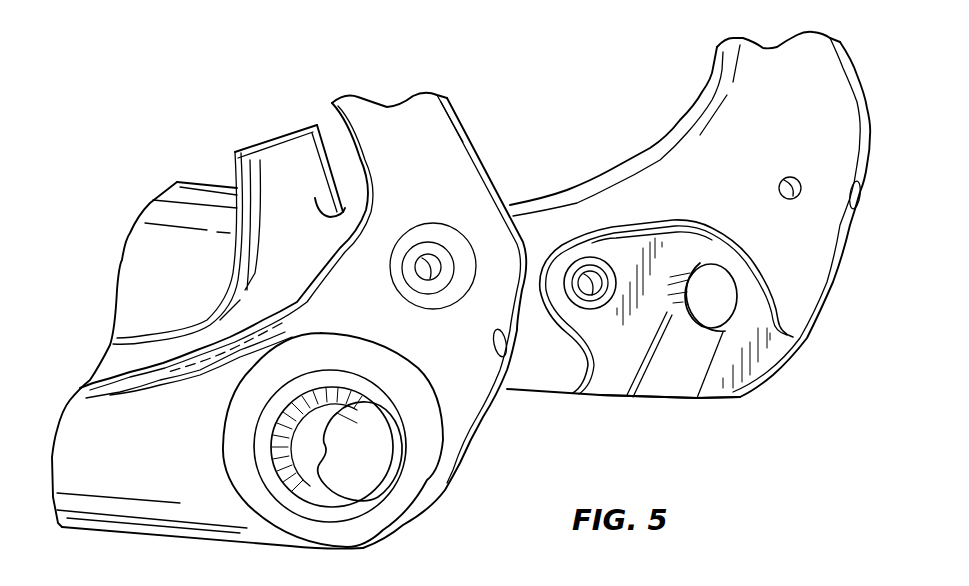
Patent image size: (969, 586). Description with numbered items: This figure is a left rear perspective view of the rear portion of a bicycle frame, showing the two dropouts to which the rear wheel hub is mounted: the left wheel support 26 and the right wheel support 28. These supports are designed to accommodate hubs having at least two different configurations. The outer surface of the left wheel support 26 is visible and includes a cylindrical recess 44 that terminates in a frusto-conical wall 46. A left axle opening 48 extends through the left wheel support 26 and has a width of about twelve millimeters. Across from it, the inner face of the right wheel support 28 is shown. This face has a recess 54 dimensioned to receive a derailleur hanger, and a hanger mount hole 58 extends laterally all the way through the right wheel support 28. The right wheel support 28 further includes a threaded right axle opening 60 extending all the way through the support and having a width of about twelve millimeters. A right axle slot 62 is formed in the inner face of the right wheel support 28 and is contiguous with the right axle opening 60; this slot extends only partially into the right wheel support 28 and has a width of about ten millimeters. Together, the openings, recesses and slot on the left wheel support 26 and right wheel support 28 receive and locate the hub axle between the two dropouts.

The left wheel support 26 is at (453, 160).
The right wheel support 28 is at (850, 143).
The cylindrical recess 44 is at (290, 480).
The frusto-conical wall 46 is at (290, 450).
The left axle opening 48 is at (357, 423).
The recess 54 is at (678, 237).
The hanger mount hole 58 is at (592, 278).
The threaded right axle opening 60 is at (717, 293).
The right axle slot 62 is at (690, 386).